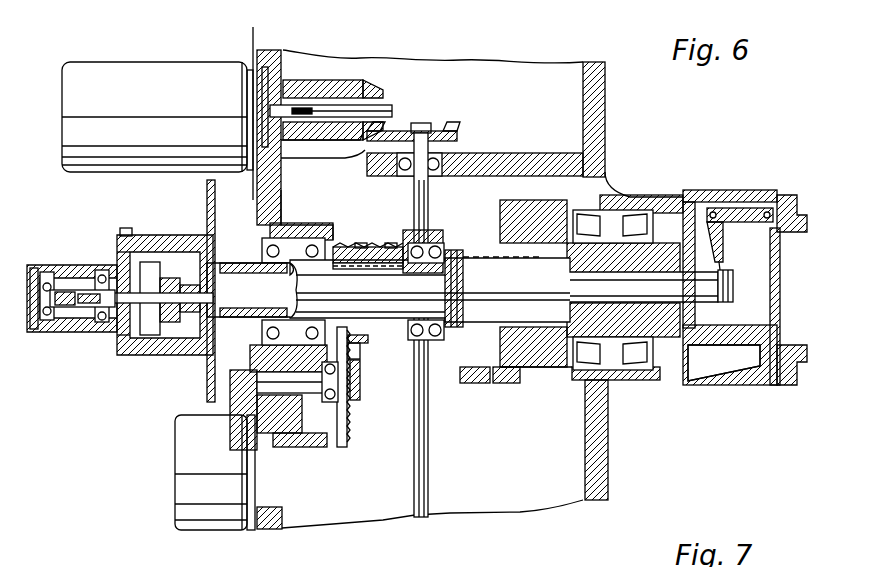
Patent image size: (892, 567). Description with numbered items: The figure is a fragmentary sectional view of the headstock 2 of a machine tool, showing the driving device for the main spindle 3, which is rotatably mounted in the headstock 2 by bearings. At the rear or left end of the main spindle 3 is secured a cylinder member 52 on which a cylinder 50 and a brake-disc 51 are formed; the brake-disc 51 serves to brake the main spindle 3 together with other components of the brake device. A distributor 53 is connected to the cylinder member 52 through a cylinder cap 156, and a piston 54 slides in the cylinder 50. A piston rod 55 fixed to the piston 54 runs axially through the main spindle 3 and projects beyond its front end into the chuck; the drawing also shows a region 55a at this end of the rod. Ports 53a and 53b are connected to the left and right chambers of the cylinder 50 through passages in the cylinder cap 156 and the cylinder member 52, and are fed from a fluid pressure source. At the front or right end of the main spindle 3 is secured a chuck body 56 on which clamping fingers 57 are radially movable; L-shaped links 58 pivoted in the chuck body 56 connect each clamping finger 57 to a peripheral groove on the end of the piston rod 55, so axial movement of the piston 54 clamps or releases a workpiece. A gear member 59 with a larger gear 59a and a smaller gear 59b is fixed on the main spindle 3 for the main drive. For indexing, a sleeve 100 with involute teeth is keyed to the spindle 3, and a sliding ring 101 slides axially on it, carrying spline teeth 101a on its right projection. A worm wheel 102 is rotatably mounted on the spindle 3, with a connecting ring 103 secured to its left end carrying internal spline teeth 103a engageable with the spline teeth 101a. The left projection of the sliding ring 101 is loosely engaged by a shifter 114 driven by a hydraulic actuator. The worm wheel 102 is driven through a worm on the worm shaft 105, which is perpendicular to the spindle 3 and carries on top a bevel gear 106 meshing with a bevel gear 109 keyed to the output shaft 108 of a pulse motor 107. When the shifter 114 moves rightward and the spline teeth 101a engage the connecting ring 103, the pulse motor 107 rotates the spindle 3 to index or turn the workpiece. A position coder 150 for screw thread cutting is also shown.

The headstock 2 is at (605, 113).
The main spindle 3 is at (608, 410).
The cylinder 50 is at (165, 355).
The brake-disc 51 is at (207, 190).
The cylinder member 52 is at (172, 235).
The distributor 53 is at (80, 332).
The port 53a is at (88, 265).
The port 53b is at (70, 265).
The piston 54 is at (190, 355).
The piston rod 55 is at (718, 312).
The tapered bore 55a is at (722, 383).
The chuck body 56 is at (765, 385).
The clamping finger 57 is at (783, 195).
The L-shaped link 58 is at (728, 190).
The gear member 59 is at (555, 370).
The larger gear 59a is at (510, 383).
The smaller gear 59b is at (477, 383).
The sleeve 100 is at (338, 247).
The sliding ring 101 is at (345, 250).
The spline teeth 101a is at (366, 245).
The worm wheel 102 is at (455, 250).
The connecting ring 103 is at (428, 244).
The spline teeth 103a is at (395, 252).
The worm shaft 105 is at (415, 435).
The bevel gear 106 is at (462, 128).
The pulse motor 107 is at (173, 78).
The output shaft 108 is at (283, 90).
The bevel gear 109 is at (382, 130).
The shifter 114 is at (362, 366).
The position coder 150 is at (213, 522).
The cylinder cap 156 is at (118, 340).